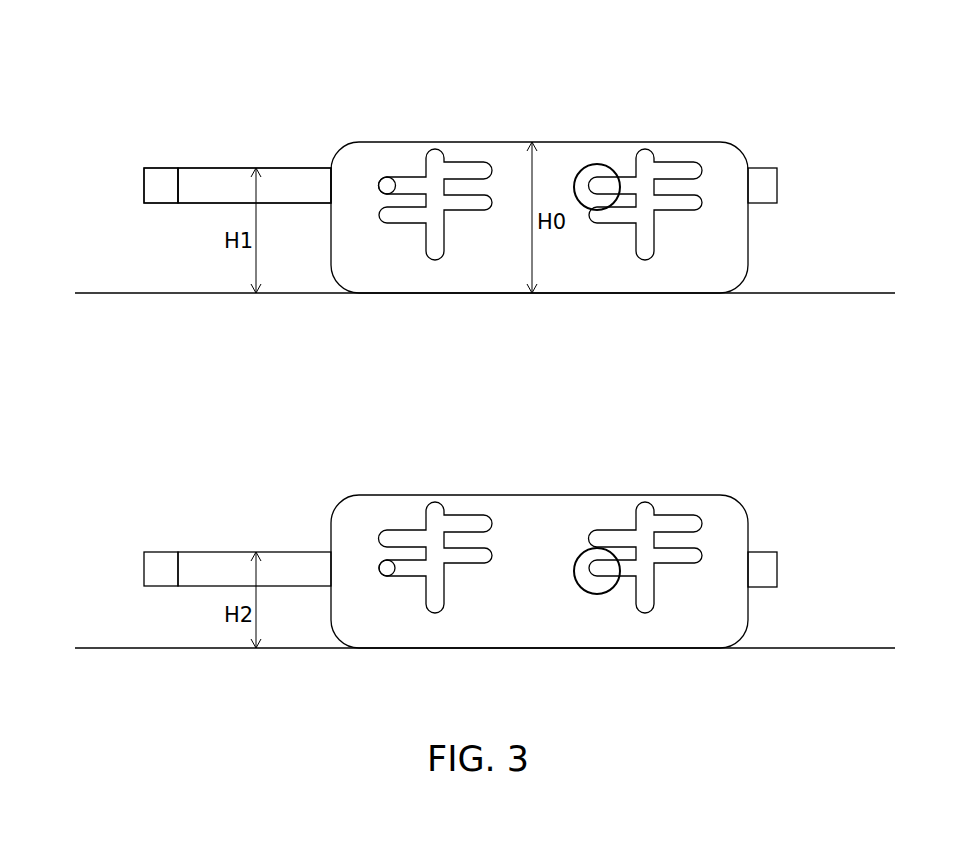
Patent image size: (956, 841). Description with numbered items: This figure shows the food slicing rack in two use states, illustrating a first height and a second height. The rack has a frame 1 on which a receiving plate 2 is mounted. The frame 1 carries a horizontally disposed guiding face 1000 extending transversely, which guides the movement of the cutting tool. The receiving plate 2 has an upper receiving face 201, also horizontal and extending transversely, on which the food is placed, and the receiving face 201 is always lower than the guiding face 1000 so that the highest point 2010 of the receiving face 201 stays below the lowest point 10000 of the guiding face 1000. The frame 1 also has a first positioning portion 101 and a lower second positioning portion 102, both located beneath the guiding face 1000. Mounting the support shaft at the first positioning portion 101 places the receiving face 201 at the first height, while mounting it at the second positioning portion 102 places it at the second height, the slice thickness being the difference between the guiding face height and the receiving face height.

The frame 1 is at (720, 237).
The receiving plate 2 is at (193, 178).
The first positioning portion 101 is at (407, 185).
The second positioning portion 102 is at (407, 571).
The receiving face 201 is at (306, 168).
The highest point of the receiving face 2010 is at (144, 168).
The guiding face 1000 is at (597, 141).
The lowest point of the guiding face 10000 is at (352, 142).